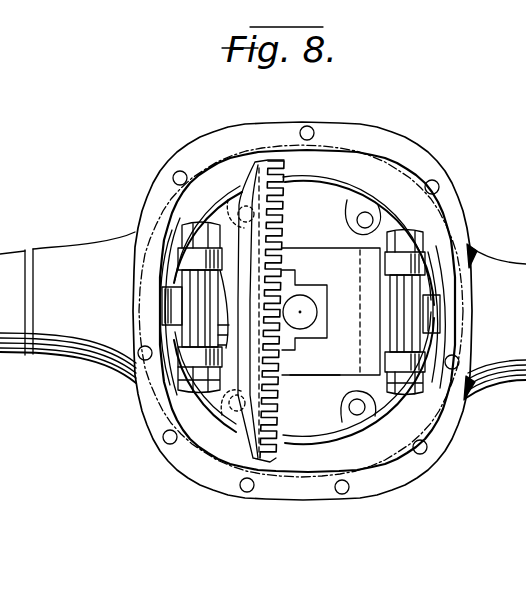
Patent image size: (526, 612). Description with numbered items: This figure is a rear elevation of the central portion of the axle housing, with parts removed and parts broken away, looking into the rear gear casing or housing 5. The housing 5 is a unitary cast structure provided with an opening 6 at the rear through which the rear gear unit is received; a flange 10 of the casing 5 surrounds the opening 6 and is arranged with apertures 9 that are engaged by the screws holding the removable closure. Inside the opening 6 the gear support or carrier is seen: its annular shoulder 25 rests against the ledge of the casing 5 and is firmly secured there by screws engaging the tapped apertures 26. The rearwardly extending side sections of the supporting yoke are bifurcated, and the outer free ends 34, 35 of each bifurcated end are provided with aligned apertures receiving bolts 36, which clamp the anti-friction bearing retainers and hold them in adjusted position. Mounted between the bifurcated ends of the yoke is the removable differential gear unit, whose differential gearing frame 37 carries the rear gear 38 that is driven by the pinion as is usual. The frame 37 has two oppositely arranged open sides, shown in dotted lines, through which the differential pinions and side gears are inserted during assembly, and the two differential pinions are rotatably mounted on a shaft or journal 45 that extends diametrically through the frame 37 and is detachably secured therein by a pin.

The rear gear casing or housing 5 is at (400, 141).
The opening 6 is at (202, 427).
The apertures 9 is at (310, 129).
The flange 10 is at (202, 159).
The annular shoulder 25 is at (350, 166).
The tapped apertures 26 is at (237, 205).
The outer free end of bifurcated yoke end 34 is at (181, 361).
The outer free end of bifurcated yoke end 35 is at (180, 262).
The bolts 36 is at (184, 310).
The differential gearing frame 37 is at (308, 372).
The rear gear 38 is at (252, 448).
The shaft or journal 45 is at (308, 311).